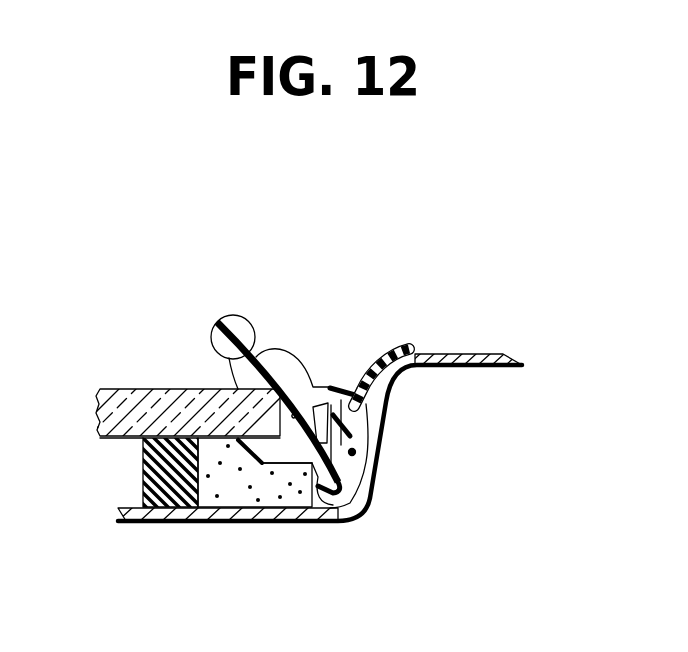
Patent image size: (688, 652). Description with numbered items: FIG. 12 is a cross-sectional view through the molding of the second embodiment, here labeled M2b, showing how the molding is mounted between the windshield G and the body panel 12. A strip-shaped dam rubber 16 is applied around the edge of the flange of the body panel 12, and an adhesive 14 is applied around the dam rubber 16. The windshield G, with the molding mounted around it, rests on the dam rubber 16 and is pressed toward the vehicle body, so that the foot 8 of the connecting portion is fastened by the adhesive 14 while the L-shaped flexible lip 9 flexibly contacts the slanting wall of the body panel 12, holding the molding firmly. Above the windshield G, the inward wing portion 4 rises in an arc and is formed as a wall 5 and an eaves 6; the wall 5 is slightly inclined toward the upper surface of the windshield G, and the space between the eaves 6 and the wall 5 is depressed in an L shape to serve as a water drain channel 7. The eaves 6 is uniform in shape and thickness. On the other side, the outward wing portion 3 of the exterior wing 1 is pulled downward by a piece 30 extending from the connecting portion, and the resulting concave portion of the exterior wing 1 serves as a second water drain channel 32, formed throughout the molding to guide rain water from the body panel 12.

The inward wing portion 4 is at (214, 240).
The wall 5 is at (262, 323).
The eaves 6 is at (208, 334).
The exterior wing 1 is at (292, 363).
The molding assembly M2b is at (319, 257).
The second water drain channel 32 is at (340, 381).
The outward wing portion 3 is at (385, 343).
The body panel 12 is at (473, 355).
The water drain channel 7 is at (223, 373).
The windshield G is at (140, 441).
The piece 30 is at (330, 427).
The flexible lip 9 is at (330, 476).
The dam rubber 16 is at (150, 462).
The adhesive 14 is at (233, 490).
The foot 8 is at (283, 452).